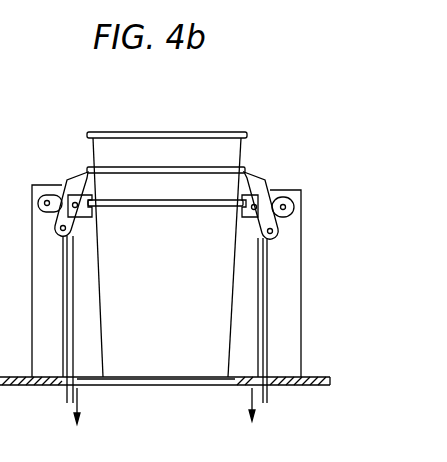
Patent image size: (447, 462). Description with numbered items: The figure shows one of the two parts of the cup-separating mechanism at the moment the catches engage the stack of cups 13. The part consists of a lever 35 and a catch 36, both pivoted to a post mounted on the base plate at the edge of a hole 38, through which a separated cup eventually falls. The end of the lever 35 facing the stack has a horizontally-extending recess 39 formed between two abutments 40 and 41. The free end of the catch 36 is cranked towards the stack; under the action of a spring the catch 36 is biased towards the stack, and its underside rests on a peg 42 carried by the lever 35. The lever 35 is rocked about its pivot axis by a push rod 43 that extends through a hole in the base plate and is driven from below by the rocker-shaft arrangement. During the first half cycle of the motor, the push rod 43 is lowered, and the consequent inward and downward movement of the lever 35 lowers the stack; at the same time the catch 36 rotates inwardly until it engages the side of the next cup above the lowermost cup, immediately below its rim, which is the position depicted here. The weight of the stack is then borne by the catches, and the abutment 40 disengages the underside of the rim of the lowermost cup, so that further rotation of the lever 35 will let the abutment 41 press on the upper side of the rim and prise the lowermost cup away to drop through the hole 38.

The container 13 is at (167, 254).
The lever 35 is at (283, 198).
The catch 36 is at (252, 176).
The hole 38 is at (235, 382).
The horizontally-extending recess 39 is at (95, 207).
The abutment 40 is at (240, 217).
The abutment 41 is at (236, 192).
The peg 42 is at (262, 208).
The push rod 43 is at (268, 297).